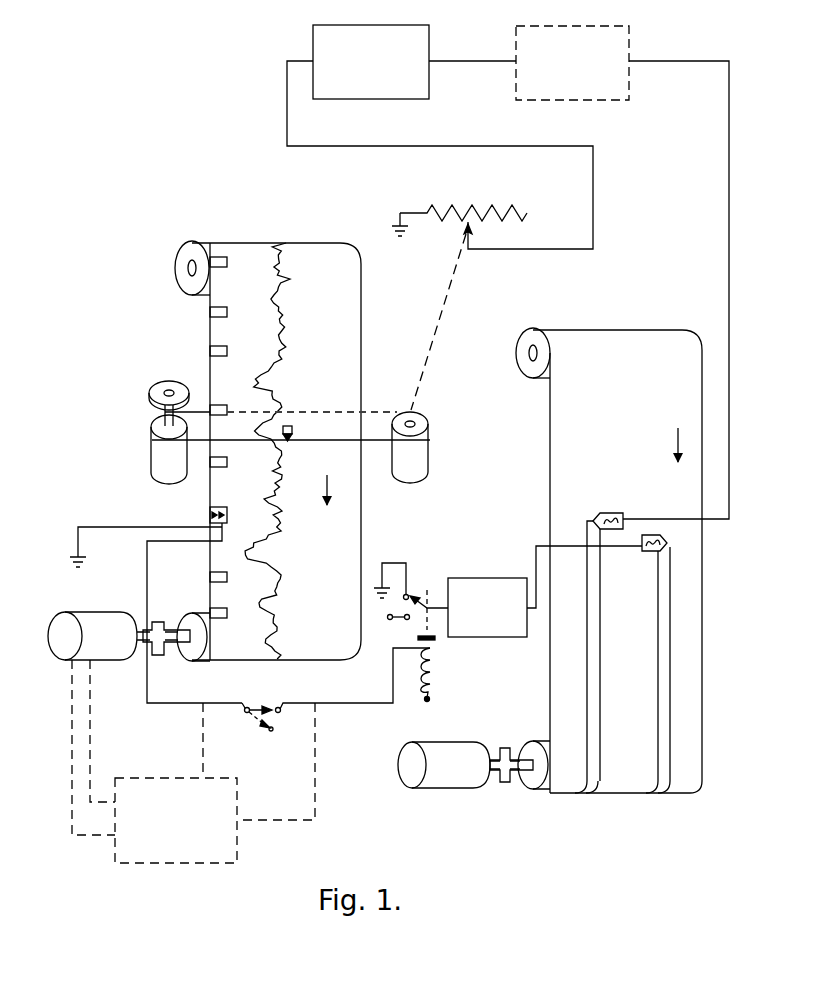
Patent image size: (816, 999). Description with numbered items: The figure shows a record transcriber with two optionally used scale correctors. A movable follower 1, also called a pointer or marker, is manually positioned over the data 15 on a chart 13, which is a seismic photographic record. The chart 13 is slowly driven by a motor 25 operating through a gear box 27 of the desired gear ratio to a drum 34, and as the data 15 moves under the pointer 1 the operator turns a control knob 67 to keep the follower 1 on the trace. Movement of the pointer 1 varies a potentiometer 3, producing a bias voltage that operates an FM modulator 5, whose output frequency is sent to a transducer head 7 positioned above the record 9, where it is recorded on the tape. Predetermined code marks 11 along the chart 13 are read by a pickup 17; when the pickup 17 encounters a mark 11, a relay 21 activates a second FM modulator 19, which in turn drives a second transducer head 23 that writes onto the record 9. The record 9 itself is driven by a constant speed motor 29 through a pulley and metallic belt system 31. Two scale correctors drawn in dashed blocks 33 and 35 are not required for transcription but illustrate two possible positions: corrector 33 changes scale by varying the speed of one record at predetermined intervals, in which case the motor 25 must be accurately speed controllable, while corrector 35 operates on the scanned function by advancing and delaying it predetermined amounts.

The movable follower 1 is at (294, 431).
The potentiometer 3 is at (475, 296).
The modulator 5 is at (433, 34).
The transducer head 7 is at (612, 506).
The record 9 is at (550, 414).
The code marks 11 is at (227, 312).
The chart 13 is at (361, 306).
The data 15 is at (284, 322).
The pickup 17 is at (200, 541).
The modulator 19 is at (477, 578).
The relay 21 is at (438, 655).
The transducer head 23 is at (647, 551).
The motor 25 is at (82, 612).
The gear box 27 is at (160, 661).
The constant speed motor 29 is at (460, 788).
The pulley and metallic belt system 31 is at (505, 782).
The scale corrector 33 is at (238, 797).
The drum 34 is at (185, 618).
The scale corrector 35 is at (629, 28).
The control knob 67 is at (165, 382).